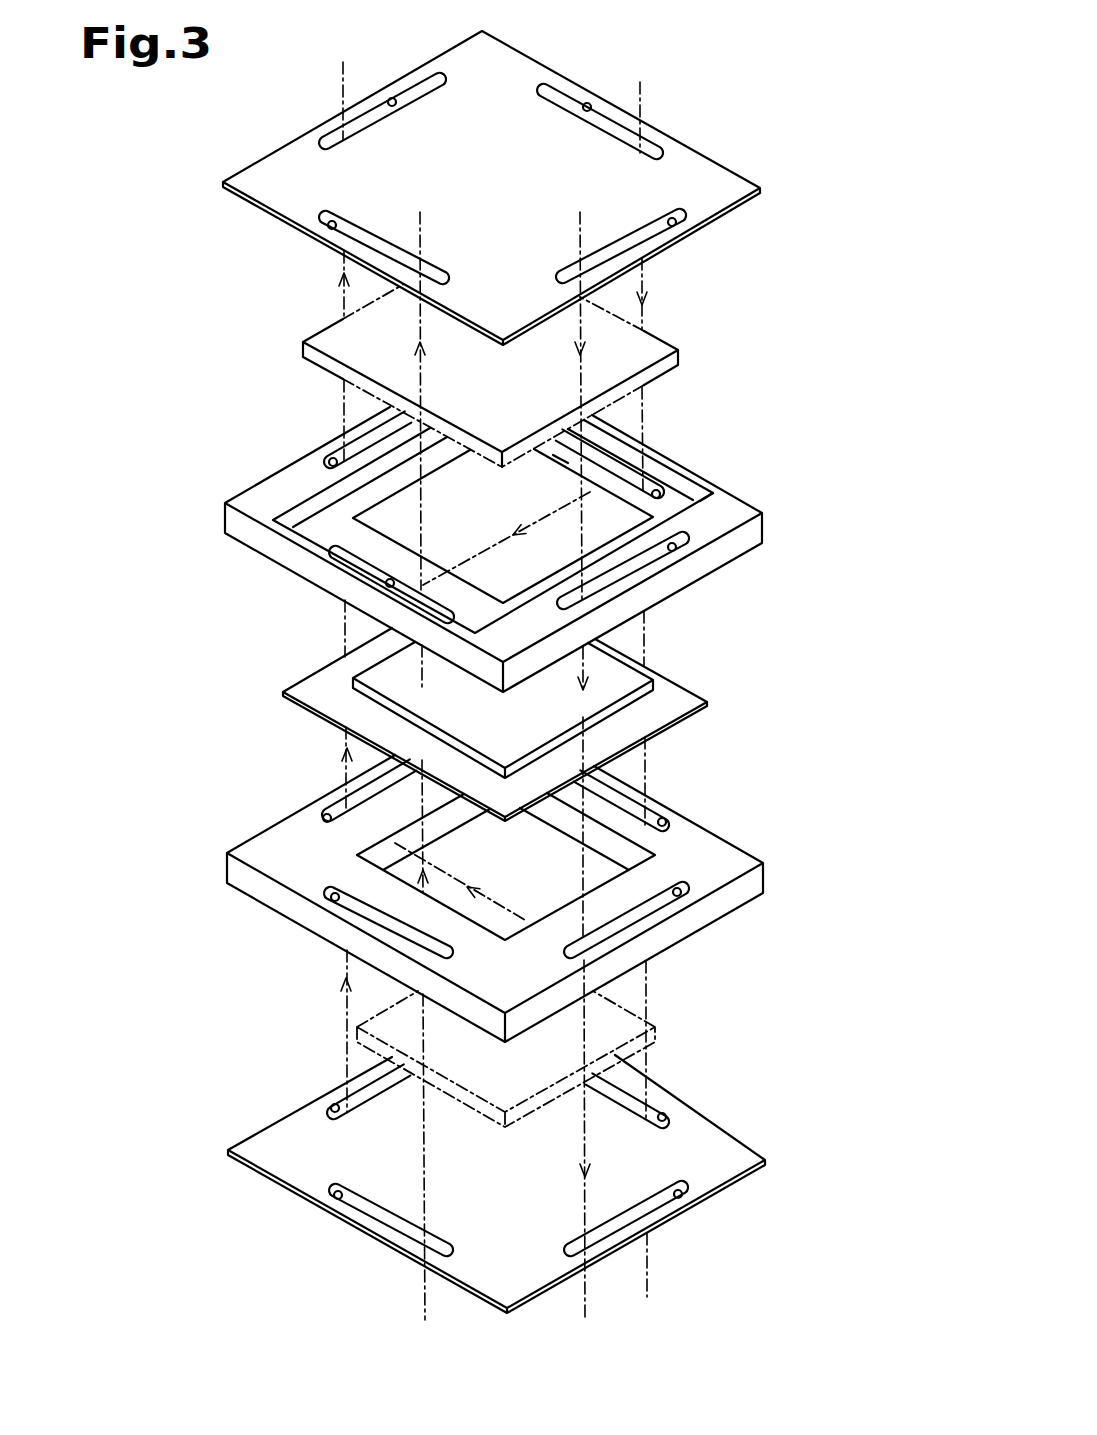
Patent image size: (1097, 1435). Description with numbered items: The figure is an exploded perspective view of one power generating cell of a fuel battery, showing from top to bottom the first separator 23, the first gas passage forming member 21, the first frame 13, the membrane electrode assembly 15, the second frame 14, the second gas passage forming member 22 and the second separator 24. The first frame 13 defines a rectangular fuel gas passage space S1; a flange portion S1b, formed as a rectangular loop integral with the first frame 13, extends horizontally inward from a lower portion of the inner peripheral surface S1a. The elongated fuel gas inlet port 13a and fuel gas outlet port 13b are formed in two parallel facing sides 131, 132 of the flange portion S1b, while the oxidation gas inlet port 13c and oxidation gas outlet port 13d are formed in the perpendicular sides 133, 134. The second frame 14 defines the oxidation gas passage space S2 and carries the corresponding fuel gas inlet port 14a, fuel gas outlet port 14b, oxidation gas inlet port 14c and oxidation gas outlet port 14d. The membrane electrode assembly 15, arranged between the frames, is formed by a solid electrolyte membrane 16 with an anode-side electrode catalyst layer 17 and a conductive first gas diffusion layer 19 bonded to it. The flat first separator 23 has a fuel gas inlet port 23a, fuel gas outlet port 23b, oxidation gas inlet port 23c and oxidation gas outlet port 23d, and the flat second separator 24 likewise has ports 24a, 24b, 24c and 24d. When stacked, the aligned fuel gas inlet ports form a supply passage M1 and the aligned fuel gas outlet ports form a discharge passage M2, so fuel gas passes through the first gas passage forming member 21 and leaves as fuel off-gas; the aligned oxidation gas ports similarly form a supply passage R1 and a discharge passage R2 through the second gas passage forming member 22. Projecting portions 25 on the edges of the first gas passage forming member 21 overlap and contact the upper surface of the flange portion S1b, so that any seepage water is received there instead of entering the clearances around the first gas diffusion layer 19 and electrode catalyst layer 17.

The first frame 13 is at (743, 512).
The fuel gas inlet port 13a is at (652, 495).
The fuel gas outlet port 13b is at (387, 583).
The oxidation gas inlet port 13c is at (670, 547).
The oxidation gas outlet port 13d is at (333, 462).
The side of flange portion 131 is at (365, 552).
The side of flange portion 132 is at (598, 478).
The side of flange portion 133 is at (650, 572).
The side of flange portion 134 is at (330, 455).
The second frame 14 is at (737, 853).
The fuel gas inlet port 14a is at (657, 823).
The fuel gas outlet port 14b is at (327, 895).
The oxidation gas inlet port 14c is at (666, 907).
The oxidation gas outlet port 14d is at (332, 810).
The membrane electrode assembly 15 is at (727, 665).
The solid electrolyte membrane 16 is at (683, 700).
The electrode catalyst layer 17 is at (628, 712).
The first gas diffusion layer 19 is at (637, 680).
The first gas passage forming member 21 is at (660, 352).
The second gas passage forming member 22 is at (653, 1020).
The first separator 23 is at (535, 70).
The fuel gas inlet port 23a is at (587, 107).
The fuel gas outlet port 23b is at (332, 225).
The oxidation gas inlet port 23c is at (672, 222).
The oxidation gas outlet port 23d is at (392, 102).
The second separator 24 is at (730, 1145).
The fuel gas inlet port 24a is at (662, 1117).
The fuel gas outlet port 24b is at (333, 1193).
The oxidation gas inlet port 24c is at (677, 1193).
The oxidation gas outlet port 24d is at (337, 1107).
The projecting portions 25 is at (316, 333).
The fuel gas passage space S1 is at (480, 510).
The inner peripheral surface S1a is at (692, 493).
The flange portion S1b is at (562, 460).
The oxidation gas passage space S2 is at (528, 870).
The supply passage R1 is at (577, 749).
The discharge passage R2 is at (347, 571).
The supply passage M1 is at (640, 670).
The discharge passage M2 is at (417, 749).